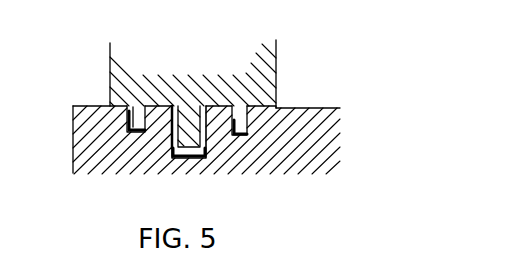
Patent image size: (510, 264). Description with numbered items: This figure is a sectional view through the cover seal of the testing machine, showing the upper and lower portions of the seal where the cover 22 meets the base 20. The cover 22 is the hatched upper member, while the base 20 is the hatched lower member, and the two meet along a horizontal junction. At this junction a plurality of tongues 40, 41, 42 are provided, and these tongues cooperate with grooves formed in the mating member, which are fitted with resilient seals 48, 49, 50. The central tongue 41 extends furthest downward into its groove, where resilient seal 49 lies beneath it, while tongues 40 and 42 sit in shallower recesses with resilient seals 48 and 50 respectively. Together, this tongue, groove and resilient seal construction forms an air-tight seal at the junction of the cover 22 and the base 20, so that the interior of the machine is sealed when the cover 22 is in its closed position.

The base 20 is at (318, 108).
The cover 22 is at (277, 61).
The tongue 40 is at (132, 116).
The tongue 41 is at (172, 140).
The tongue 42 is at (252, 118).
The resilient seal 48 is at (73, 173).
The resilient seal 49 is at (192, 158).
The resilient seal 50 is at (235, 137).